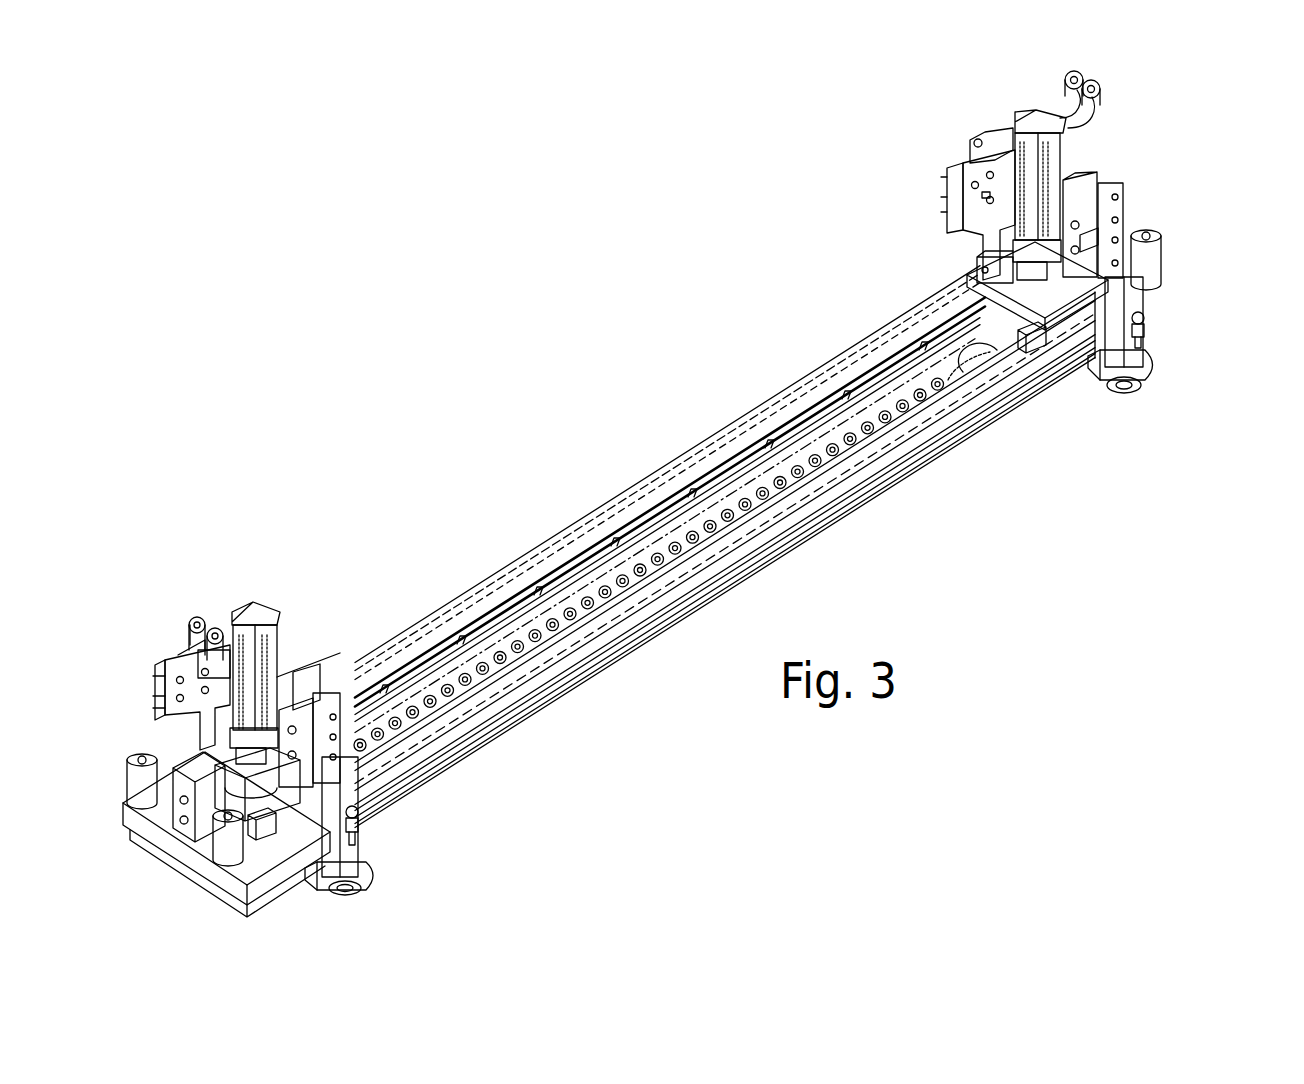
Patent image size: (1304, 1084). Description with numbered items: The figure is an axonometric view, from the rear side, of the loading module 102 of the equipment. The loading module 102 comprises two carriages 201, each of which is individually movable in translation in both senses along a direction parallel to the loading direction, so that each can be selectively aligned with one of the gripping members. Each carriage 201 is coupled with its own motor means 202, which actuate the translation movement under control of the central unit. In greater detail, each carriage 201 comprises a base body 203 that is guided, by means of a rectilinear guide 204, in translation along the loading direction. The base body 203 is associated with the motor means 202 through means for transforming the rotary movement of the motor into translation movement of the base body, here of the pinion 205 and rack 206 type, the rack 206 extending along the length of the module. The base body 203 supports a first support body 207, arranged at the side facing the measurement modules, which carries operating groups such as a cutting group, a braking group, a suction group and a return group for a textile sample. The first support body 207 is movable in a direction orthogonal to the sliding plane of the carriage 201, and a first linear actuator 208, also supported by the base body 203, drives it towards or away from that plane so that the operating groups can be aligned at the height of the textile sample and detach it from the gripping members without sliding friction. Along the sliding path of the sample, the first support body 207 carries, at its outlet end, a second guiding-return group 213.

The loading module 102 is at (1180, 146).
The carriage 201 is at (1162, 338).
The motor means 202 is at (276, 652).
The base body 203 is at (960, 278).
The rectilinear guide 204 is at (751, 445).
The pinion 205 is at (259, 830).
The rack 206 is at (962, 375).
The first support body 207 is at (362, 876).
The first linear actuator 208 is at (356, 832).
The second guiding-return group 213 is at (1124, 396).